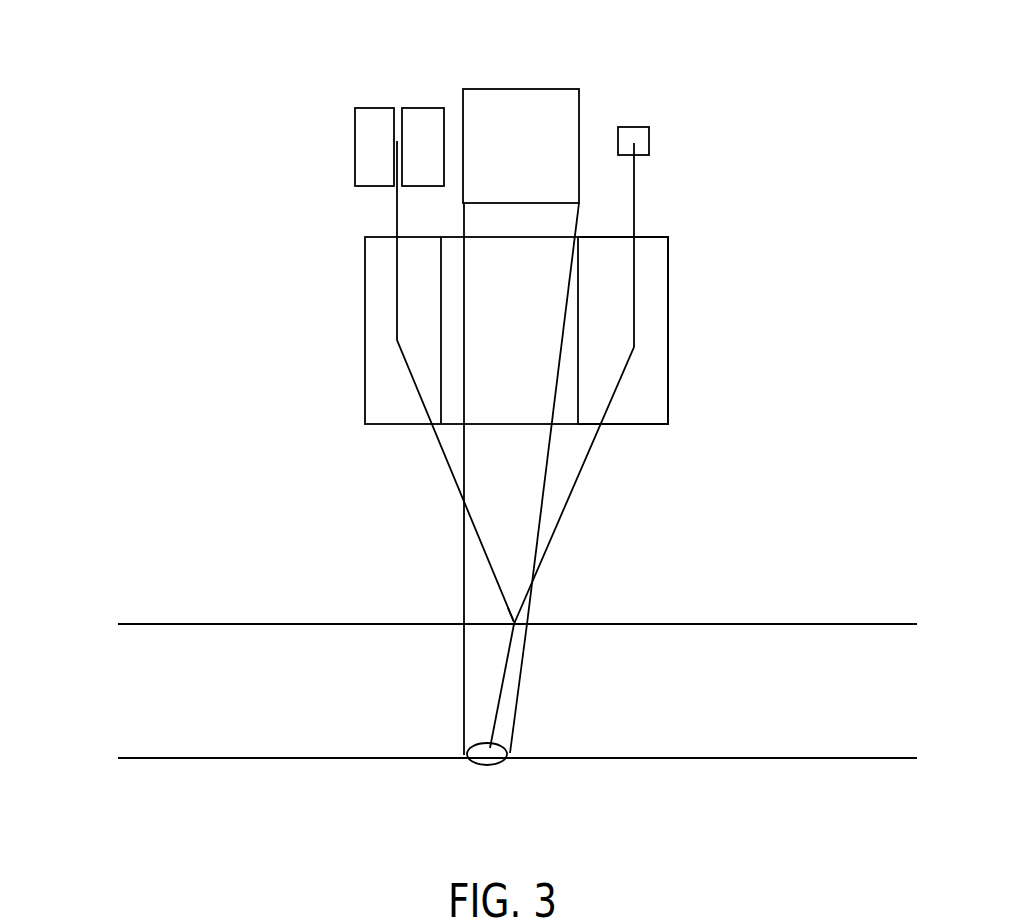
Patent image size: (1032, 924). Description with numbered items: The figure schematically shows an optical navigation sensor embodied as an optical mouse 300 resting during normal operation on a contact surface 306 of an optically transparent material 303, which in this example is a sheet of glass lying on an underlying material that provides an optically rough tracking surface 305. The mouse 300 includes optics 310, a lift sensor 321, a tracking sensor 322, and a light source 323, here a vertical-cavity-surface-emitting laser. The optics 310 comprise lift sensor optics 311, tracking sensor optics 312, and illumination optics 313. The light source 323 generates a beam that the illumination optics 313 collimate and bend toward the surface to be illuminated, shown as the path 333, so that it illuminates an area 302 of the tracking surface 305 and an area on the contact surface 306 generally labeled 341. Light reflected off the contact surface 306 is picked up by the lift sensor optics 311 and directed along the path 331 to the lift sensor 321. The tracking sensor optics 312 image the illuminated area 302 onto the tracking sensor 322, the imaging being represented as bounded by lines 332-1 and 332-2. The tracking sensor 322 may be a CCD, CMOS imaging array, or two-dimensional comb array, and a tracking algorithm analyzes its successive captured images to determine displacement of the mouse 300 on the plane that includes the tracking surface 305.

The optical mouse 300 is at (108, 244).
The optics 310 is at (290, 330).
The lift sensor optics 311 is at (383, 415).
The tracking sensor optics 312 is at (525, 382).
The illumination optics 313 is at (660, 275).
The lift sensor 321 is at (390, 98).
The tracking sensor 322 is at (490, 89).
The light source 323 is at (640, 127).
The lift sensor light path 331 is at (397, 210).
The illumination light path 333 is at (600, 458).
The illuminated area on the contact surface 341 is at (505, 619).
The line 332-1 is at (510, 725).
The line 332-2 is at (465, 718).
The illuminated area 302 is at (483, 765).
The optically transparent material 303 is at (323, 705).
The tracking surface 305 is at (770, 758).
The contact surface 306 is at (770, 625).